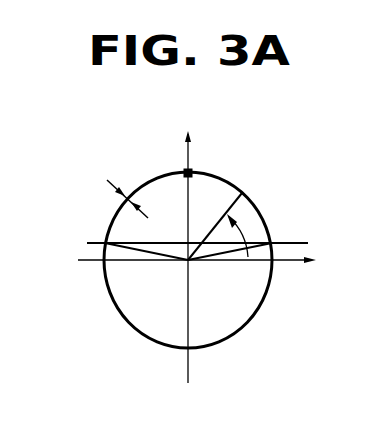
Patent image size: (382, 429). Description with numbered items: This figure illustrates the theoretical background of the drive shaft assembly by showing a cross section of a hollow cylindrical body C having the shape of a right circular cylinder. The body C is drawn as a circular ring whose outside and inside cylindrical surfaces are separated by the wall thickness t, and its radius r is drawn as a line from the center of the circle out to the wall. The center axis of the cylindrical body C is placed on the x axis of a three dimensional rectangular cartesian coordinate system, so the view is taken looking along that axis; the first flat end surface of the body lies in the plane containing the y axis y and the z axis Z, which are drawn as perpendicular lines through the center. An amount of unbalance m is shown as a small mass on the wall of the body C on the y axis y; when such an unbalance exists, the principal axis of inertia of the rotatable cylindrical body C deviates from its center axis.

The hollow cylindrical body C is at (132, 326).
The y axis y is at (187, 243).
The z axis Z is at (206, 258).
The amount of unbalance m is at (199, 158).
The radius r is at (215, 226).
The wall thickness t is at (127, 192).